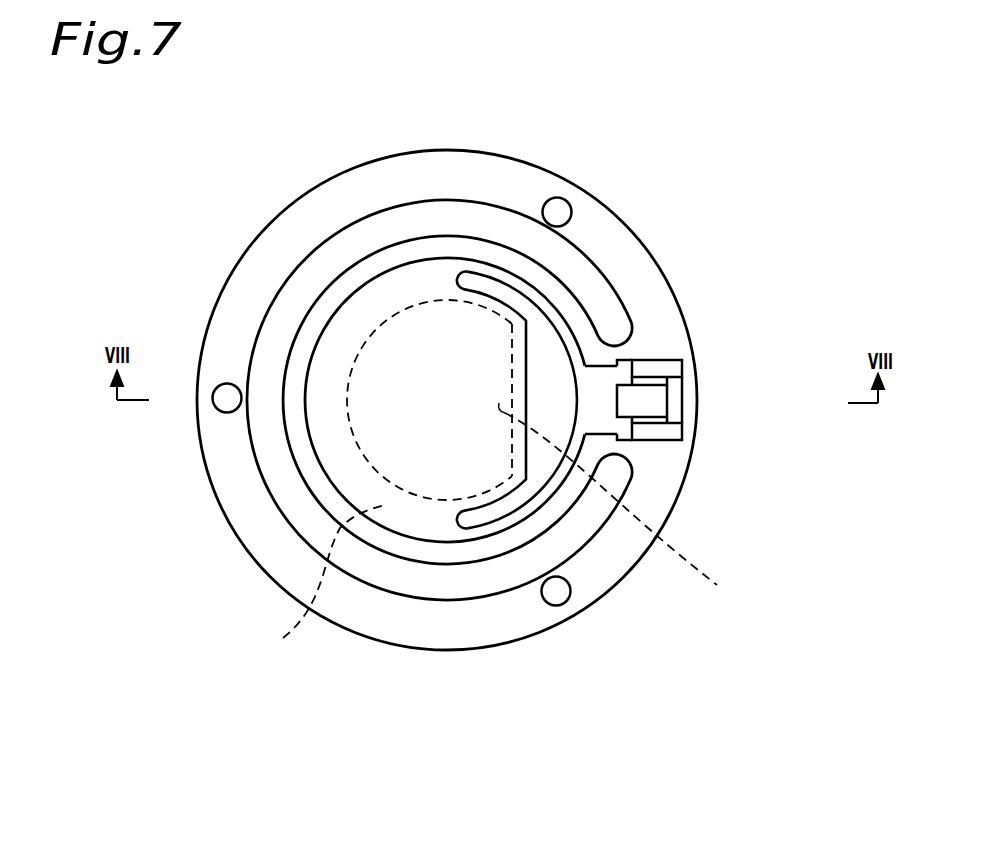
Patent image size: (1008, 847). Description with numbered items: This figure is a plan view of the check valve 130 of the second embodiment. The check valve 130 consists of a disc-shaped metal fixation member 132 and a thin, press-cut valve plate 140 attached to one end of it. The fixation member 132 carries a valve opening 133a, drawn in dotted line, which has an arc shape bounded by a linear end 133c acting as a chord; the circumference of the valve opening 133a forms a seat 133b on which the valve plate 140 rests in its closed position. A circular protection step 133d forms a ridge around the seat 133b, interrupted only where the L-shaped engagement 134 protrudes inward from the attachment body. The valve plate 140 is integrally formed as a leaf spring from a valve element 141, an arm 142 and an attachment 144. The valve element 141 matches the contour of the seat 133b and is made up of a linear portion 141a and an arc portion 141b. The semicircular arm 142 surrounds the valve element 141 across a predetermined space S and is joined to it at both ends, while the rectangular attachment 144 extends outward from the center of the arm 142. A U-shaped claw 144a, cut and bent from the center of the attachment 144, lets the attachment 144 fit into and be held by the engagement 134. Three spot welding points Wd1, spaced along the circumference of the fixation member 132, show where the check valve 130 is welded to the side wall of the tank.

The check valve 130 is at (523, 370).
The fixation member 132 is at (642, 273).
The valve plate 140 is at (562, 312).
The valve element 141 is at (344, 318).
The linear portion 141a is at (480, 380).
The arc portion 141b is at (393, 357).
The arm 142 is at (543, 510).
The attachment 144 is at (717, 394).
The U-shaped claw 144a is at (630, 397).
The engagement 134 is at (658, 438).
The valve opening 133a is at (447, 304).
The seat 133b is at (310, 592).
The linear end 133c is at (643, 506).
The circular protection step 133d is at (303, 523).
The space S is at (483, 518).
The spot welding points Wd1 is at (552, 207).